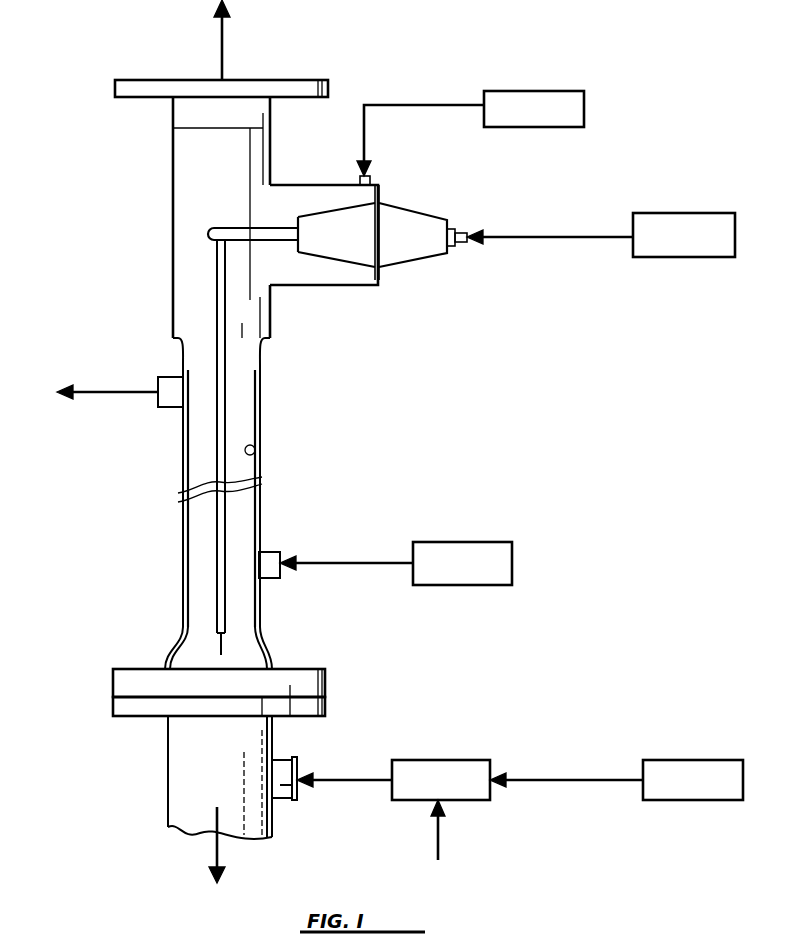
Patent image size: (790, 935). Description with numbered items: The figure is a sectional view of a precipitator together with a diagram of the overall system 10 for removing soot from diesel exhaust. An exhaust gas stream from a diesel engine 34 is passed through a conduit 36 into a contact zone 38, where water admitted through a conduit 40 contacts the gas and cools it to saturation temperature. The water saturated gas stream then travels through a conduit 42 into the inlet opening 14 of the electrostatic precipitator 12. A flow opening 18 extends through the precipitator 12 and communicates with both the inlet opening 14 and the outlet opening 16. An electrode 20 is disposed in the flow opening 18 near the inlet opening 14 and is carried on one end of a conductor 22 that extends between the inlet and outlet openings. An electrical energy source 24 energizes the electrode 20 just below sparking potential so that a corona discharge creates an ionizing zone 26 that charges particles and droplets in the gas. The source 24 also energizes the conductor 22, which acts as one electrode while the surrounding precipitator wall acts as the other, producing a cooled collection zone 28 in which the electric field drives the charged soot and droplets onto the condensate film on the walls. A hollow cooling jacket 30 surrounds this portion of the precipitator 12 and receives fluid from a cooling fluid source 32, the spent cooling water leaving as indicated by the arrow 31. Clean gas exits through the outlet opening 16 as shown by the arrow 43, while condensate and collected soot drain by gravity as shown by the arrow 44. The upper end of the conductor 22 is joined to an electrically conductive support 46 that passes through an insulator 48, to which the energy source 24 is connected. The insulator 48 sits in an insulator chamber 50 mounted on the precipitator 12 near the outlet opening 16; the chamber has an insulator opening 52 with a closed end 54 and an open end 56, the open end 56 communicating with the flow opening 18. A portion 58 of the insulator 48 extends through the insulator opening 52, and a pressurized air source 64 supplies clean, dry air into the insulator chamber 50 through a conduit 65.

The system 10 is at (415, 400).
The electrostatic precipitator 12 is at (165, 281).
The inlet opening 14 is at (297, 760).
The outlet opening 16 is at (245, 80).
The flow opening 18 is at (256, 456).
The electrode 20 is at (222, 648).
The conductor 22 is at (225, 520).
The electrical energy source 24 is at (662, 202).
The ionizing zone 26 is at (195, 637).
The cooled collection zone 28 is at (185, 463).
The cooling jacket 30 is at (260, 410).
The arrow 31 is at (118, 380).
The cooling fluid source 32 is at (478, 537).
The diesel engine 34 is at (687, 748).
The conduit 36 is at (540, 777).
The contact zone 38 is at (445, 750).
The conduit 40 is at (440, 838).
The conduit 42 is at (333, 783).
The arrow 43 is at (220, 32).
The arrow 44 is at (217, 855).
The electrically conductive support 46 is at (245, 225).
The insulator 48 is at (412, 245).
The insulator chamber 50 is at (295, 290).
The insulator opening 52 is at (283, 193).
The closed end 54 is at (382, 186).
The open end 56 is at (283, 240).
The portion of the insulator 58 is at (342, 272).
The pressurized air source 64 is at (528, 90).
The control line 65 is at (396, 104).